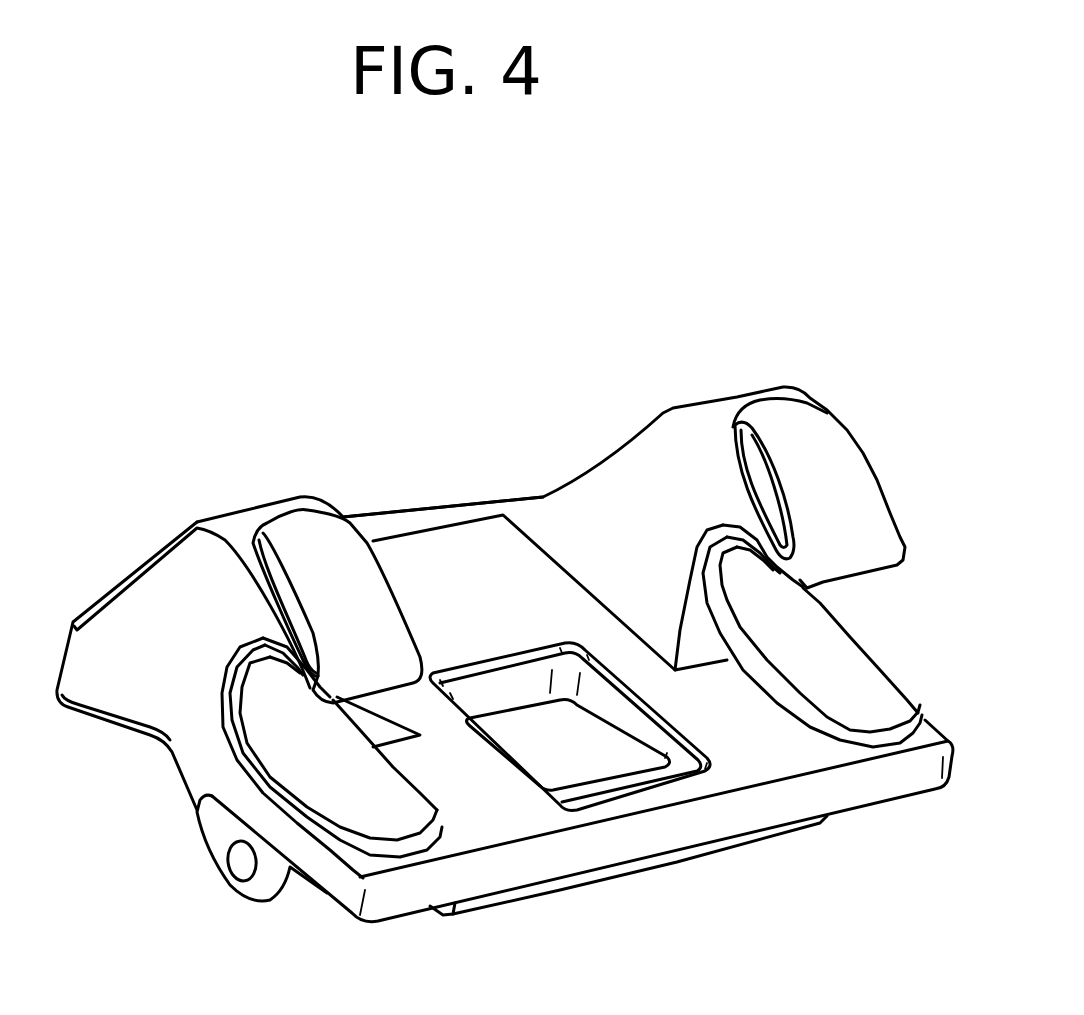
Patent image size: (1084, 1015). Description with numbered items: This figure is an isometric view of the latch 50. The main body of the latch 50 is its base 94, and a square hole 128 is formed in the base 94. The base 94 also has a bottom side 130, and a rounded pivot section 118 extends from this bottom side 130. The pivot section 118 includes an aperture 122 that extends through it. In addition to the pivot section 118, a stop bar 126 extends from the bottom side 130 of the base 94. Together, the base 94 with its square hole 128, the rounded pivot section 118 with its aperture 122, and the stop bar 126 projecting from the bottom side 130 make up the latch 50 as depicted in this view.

The latch 50 is at (142, 525).
The base 94 is at (462, 545).
The square hole 128 is at (524, 710).
The bottom side 130 is at (393, 920).
The stop bar 126 is at (677, 858).
The pivot section 118 is at (257, 903).
The aperture 122 is at (247, 860).